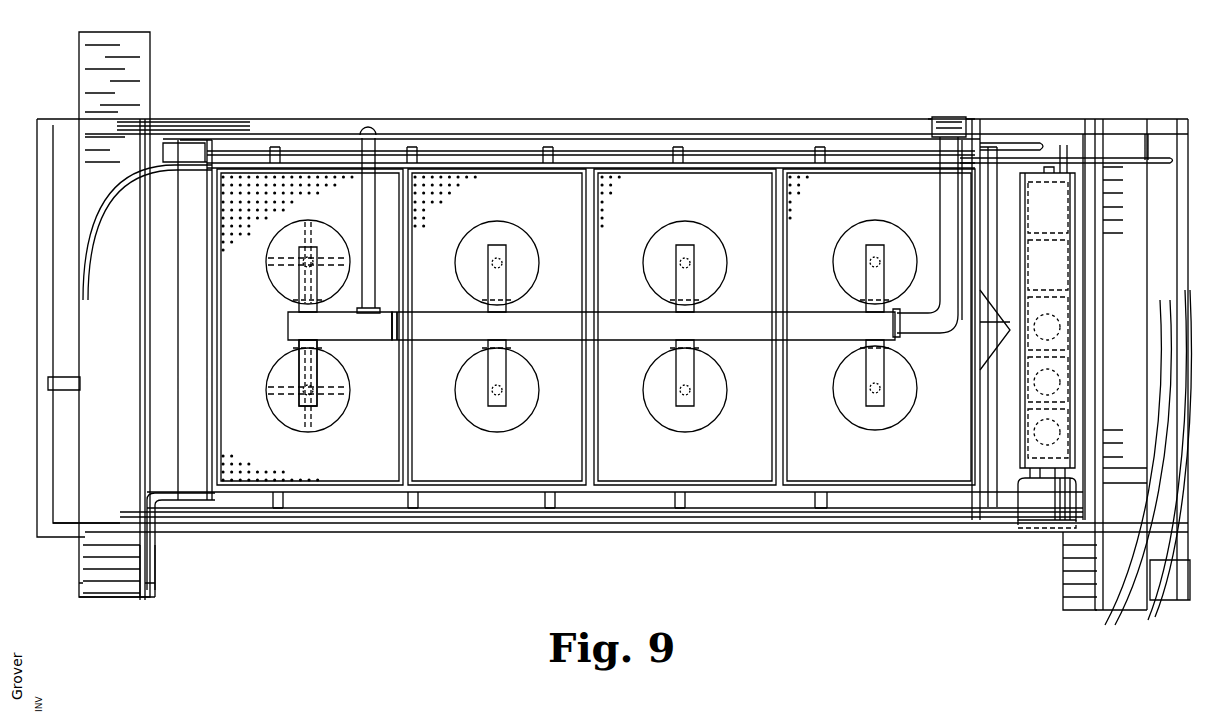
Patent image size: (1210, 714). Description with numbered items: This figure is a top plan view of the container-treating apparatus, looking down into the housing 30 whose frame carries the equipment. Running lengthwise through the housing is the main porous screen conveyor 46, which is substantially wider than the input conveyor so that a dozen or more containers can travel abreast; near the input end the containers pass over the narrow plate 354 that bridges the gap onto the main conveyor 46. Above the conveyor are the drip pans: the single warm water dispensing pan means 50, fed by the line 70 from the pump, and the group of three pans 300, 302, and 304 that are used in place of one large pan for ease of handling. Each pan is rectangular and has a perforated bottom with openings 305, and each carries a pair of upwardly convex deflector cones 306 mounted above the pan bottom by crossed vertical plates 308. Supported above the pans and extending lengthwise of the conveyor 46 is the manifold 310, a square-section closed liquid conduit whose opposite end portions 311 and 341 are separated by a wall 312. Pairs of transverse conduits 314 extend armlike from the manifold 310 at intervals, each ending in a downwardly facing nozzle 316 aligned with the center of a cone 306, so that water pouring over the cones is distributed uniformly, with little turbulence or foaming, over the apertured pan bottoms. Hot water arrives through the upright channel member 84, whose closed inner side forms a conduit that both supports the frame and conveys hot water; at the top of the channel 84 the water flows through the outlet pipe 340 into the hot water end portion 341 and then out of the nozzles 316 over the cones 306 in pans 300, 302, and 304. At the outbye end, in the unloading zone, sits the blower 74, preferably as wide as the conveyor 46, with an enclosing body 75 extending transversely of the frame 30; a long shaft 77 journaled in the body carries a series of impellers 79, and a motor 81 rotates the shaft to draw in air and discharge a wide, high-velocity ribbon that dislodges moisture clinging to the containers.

The housing 30 is at (681, 534).
The main screen conveyor 46 is at (190, 180).
The warm water dispensing pan means 50 is at (360, 467).
The line 70 is at (366, 226).
The blower 74 is at (1019, 352).
The enclosing body 75 is at (1024, 470).
The long shaft 77 is at (1049, 167).
The impellers 79 is at (1047, 379).
The motor 81 is at (1038, 508).
The upright channel member 84 is at (950, 118).
The drip pan 300 is at (492, 467).
The drip pan 302 is at (682, 467).
The drip pan 304 is at (862, 467).
The openings 305 is at (233, 240).
The deflector cones 306 is at (528, 248).
The crossed vertical plates 308 is at (285, 395).
The manifold 310 is at (279, 330).
The end portion 311 is at (344, 336).
The wall 312 is at (392, 341).
The transverse conduits 314 is at (508, 300).
The nozzle 316 is at (505, 395).
The outlet pipe 340 is at (940, 222).
The hot water end portion 341 is at (656, 336).
The narrow plate 354 is at (172, 367).